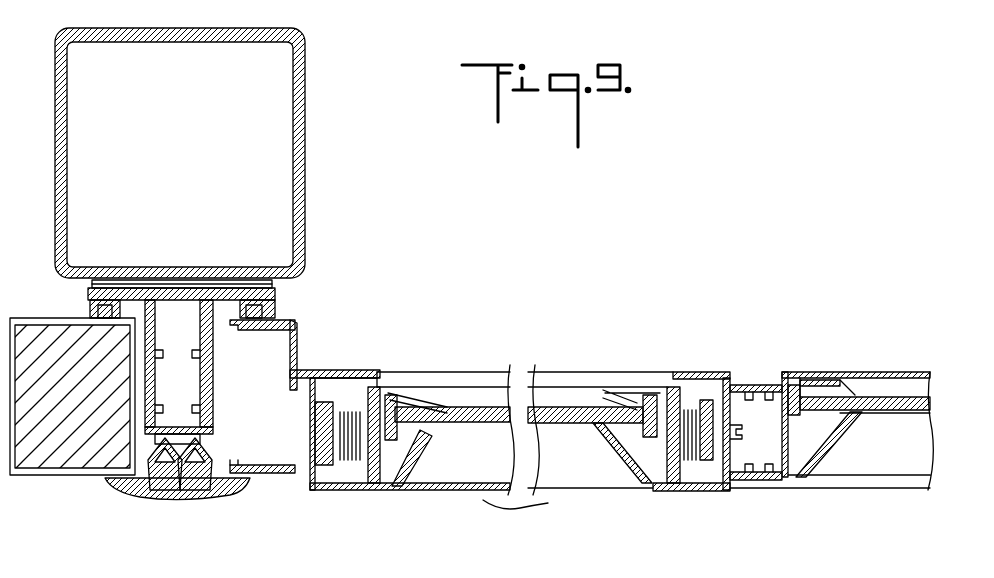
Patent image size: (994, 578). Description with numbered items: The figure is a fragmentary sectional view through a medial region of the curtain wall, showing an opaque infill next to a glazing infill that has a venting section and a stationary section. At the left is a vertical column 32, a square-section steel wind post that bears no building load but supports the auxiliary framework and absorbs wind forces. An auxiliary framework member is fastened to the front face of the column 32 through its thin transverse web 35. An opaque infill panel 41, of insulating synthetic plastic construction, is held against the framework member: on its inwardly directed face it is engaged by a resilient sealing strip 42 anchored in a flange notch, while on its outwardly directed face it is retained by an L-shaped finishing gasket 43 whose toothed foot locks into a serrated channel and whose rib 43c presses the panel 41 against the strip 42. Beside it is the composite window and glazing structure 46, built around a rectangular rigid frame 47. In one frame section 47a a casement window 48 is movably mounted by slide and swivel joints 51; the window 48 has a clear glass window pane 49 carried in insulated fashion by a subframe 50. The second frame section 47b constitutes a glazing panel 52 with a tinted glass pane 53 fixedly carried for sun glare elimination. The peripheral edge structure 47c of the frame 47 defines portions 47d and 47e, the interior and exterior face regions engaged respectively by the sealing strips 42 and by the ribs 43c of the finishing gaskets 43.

The vertical column 32 is at (306, 148).
The transverse web 35 is at (190, 298).
The infill panel 41 is at (62, 452).
The sealing strip 42 is at (276, 316).
The finishing gasket 43 is at (147, 506).
The rib 43c is at (255, 478).
The composite window and glazing structure 46 is at (690, 507).
The rigid frame 47 is at (712, 363).
The frame section 47a is at (444, 378).
The second frame section 47b is at (862, 385).
The peripheral edge structure 47c is at (300, 348).
The boundary structure portion 47d is at (260, 320).
The boundary structure portion 47e is at (260, 465).
The casement window 48 is at (458, 447).
The window pane 49 is at (544, 407).
The subframe 50 is at (622, 455).
The slide and swivel joint 51 is at (349, 401).
The glazing panel 52 is at (872, 452).
The glass pane 53 is at (890, 406).